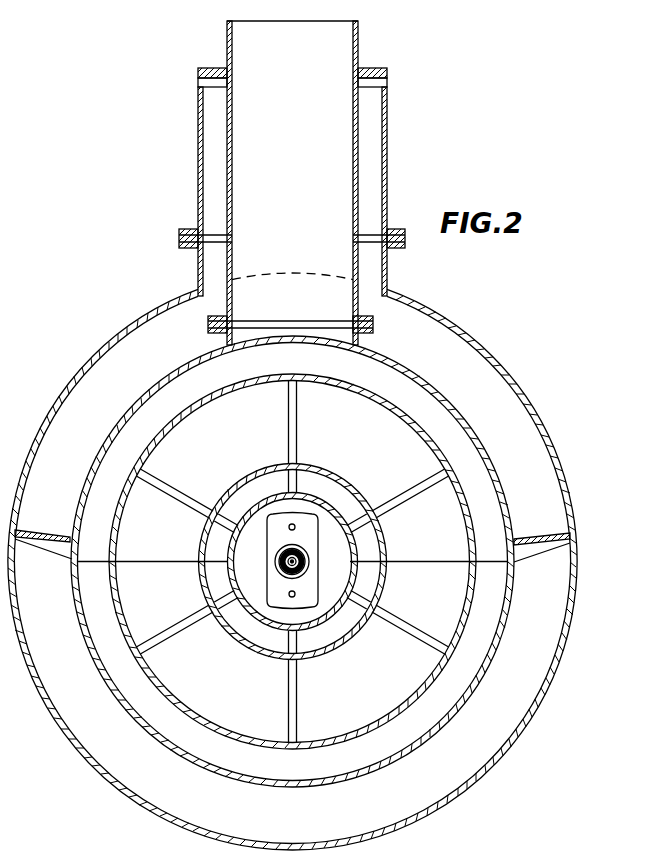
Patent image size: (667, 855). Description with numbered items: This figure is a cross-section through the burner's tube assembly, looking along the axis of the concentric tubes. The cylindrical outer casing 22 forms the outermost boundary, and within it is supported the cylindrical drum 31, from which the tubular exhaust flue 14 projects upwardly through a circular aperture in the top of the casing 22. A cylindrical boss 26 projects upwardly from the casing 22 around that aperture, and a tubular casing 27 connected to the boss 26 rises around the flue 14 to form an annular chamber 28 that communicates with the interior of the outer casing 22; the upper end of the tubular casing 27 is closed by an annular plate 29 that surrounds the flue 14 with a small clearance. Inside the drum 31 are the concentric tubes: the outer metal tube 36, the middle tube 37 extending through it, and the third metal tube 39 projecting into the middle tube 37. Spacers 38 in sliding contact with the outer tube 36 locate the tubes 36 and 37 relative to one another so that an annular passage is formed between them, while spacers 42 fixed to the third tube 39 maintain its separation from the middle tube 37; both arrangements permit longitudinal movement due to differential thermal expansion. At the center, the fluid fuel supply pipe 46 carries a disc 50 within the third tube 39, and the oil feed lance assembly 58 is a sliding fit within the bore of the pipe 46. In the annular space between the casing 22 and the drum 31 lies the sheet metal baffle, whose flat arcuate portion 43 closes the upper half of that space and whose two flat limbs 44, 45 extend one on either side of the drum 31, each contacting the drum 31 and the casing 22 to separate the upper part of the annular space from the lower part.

The tubular exhaust flue 14 is at (227, 42).
The annular plate 29 is at (375, 68).
The tubular casing 27 is at (390, 156).
The annular chamber 28 is at (370, 205).
The cylindrical boss 26 is at (387, 270).
The cylindrical outer casing 22 is at (467, 332).
The flat arcuate portion 43 is at (517, 448).
The cylindrical drum 31 is at (427, 738).
The outer metal tube 36 is at (468, 602).
The middle tube 37 is at (385, 535).
The third metal tube 39 is at (383, 585).
The spacers 38 is at (183, 493).
The spacers 42 is at (292, 487).
The disc 50 is at (278, 533).
The fluid fuel supply pipe 46 is at (276, 568).
The oil feed lance assembly 58 is at (315, 566).
The limb 45 is at (45, 533).
The limb 44 is at (540, 537).